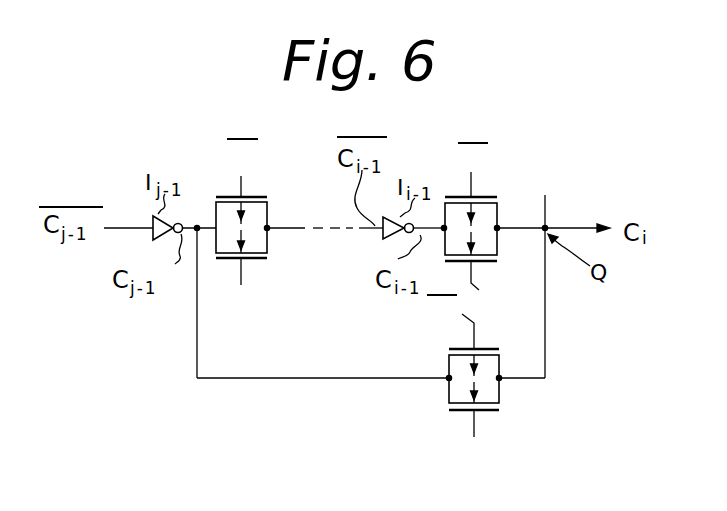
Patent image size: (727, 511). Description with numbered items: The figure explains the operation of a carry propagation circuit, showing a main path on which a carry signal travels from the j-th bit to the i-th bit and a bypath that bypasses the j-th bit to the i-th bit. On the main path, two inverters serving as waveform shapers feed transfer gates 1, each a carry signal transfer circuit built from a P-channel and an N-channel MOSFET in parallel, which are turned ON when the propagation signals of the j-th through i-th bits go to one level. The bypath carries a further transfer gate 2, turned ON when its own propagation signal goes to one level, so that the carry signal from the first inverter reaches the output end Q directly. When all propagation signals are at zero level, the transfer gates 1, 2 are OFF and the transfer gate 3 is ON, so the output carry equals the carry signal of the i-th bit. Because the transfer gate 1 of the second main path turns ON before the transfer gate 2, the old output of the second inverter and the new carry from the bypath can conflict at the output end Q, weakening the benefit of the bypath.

The carry signal transfer circuit 1 is at (262, 214).
The carry signal transfer circuit 2 is at (490, 372).
The transfer gate 3 is at (545, 195).